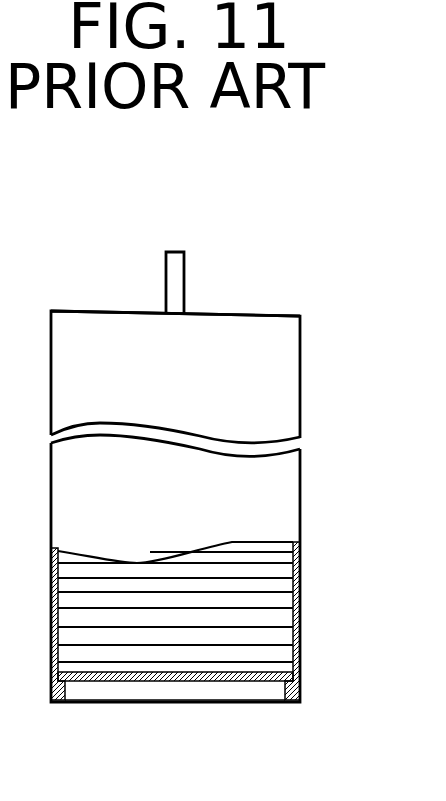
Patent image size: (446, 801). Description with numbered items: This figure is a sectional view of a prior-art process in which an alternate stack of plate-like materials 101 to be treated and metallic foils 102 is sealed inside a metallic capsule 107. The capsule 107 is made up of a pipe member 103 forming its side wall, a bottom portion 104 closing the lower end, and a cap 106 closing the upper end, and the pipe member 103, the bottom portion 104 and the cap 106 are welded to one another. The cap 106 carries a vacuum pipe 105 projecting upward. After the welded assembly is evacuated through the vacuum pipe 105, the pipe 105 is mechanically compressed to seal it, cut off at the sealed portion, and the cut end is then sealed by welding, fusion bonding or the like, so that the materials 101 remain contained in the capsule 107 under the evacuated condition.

The plate-like materials to be treated 101 is at (283, 589).
The metallic foils 102 is at (280, 663).
The pipe member 103 is at (298, 550).
The bottom portion 104 is at (232, 682).
The vacuum pipe 105 is at (184, 284).
The cap 106 is at (264, 316).
The metallic capsule 107 is at (306, 365).